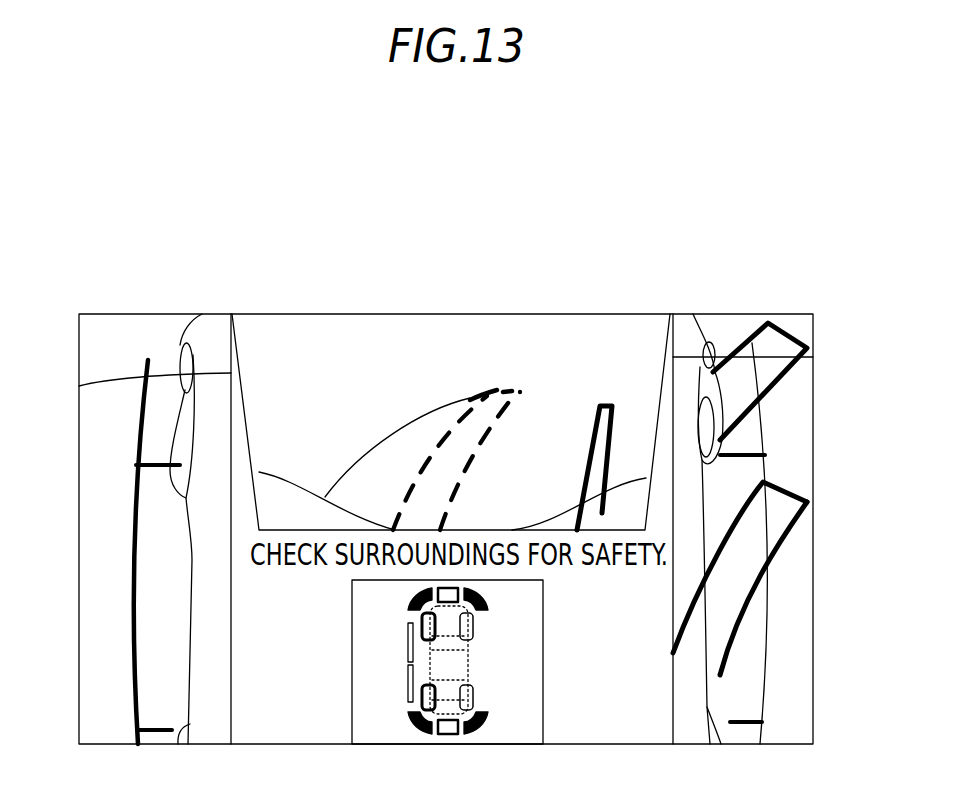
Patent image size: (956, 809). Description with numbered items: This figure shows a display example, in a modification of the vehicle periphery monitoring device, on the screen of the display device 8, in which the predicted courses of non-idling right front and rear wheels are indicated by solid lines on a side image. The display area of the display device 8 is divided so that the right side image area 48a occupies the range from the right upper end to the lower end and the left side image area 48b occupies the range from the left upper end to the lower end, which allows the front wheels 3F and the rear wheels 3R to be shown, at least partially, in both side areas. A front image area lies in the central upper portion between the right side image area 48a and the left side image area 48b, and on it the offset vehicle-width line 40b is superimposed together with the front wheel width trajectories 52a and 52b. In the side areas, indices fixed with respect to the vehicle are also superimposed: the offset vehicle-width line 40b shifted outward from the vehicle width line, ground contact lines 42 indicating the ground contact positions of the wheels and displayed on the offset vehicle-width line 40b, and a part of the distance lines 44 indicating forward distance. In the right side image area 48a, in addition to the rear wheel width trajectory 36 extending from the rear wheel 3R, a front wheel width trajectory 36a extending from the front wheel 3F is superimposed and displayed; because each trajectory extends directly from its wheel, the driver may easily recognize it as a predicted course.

The display device 8 is at (797, 315).
The rear wheel width trajectory 36 is at (787, 538).
The front wheel width trajectory 36a is at (790, 328).
The offset vehicle-width line 40b is at (412, 425).
The ground contact line 42 is at (153, 467).
The distance lines 44 is at (98, 386).
The right side image area 48a is at (787, 590).
The left side image area 48b is at (110, 588).
The front wheel width trajectory 52a is at (604, 400).
The front wheel width trajectory 52b is at (502, 388).
The front wheel 3F is at (180, 437).
The rear wheel 3R is at (183, 725).